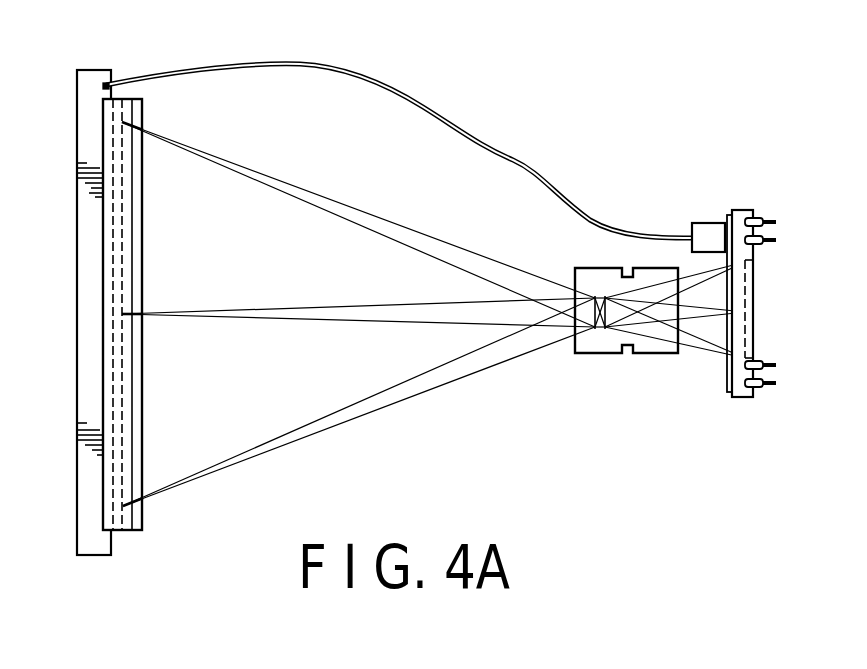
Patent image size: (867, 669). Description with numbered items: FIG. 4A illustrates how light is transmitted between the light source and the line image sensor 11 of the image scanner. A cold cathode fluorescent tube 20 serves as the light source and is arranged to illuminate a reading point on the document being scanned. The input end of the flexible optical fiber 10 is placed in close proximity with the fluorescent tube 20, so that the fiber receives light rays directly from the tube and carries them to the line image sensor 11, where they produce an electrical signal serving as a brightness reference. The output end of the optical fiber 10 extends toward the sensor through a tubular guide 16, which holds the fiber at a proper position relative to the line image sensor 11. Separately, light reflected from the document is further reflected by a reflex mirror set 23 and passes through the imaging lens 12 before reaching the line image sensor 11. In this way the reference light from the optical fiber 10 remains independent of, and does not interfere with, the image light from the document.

The optical fiber 10 is at (335, 74).
The line image sensor 11 is at (737, 207).
The imaging lens 12 is at (598, 357).
The tubular guide 16 is at (690, 228).
The cold cathode fluorescent tube 20 is at (93, 80).
The reflex mirror set 23 is at (138, 237).